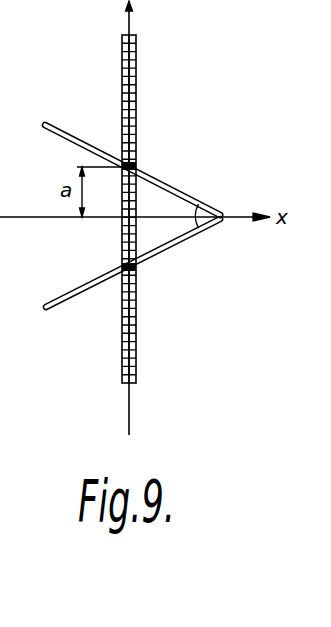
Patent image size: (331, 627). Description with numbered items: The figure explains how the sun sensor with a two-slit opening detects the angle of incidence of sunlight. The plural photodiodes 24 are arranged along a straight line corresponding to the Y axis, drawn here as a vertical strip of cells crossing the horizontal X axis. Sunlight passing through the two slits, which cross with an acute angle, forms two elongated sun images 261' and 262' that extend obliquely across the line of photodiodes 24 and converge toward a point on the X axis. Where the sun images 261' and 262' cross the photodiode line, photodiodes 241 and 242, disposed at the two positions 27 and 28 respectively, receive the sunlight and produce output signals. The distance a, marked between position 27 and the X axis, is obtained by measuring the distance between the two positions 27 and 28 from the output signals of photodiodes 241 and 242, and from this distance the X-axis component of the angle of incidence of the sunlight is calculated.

The photodiodes 24 is at (135, 305).
The photodiode 241 is at (123, 165).
The photodiode 242 is at (122, 268).
The position 27 is at (135, 163).
The position 28 is at (118, 273).
The sun image 261' is at (133, 170).
The sun image 262' is at (157, 238).